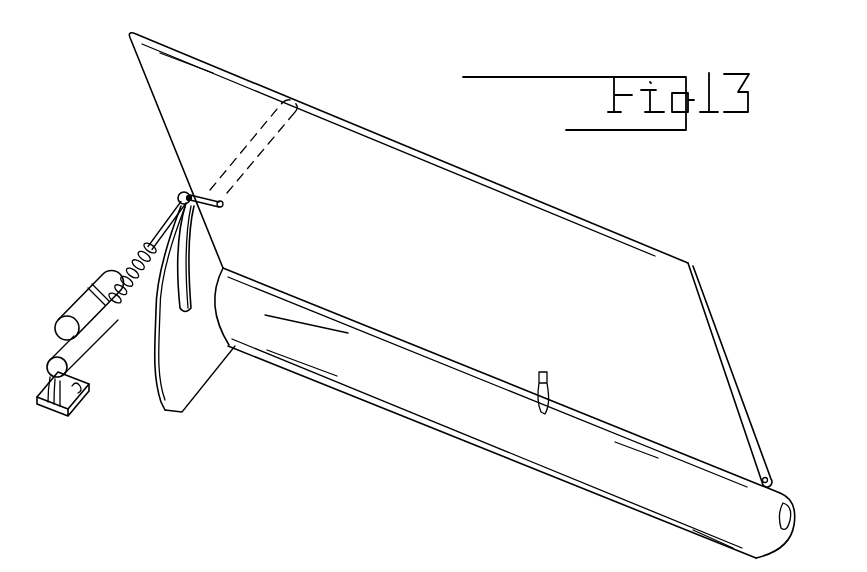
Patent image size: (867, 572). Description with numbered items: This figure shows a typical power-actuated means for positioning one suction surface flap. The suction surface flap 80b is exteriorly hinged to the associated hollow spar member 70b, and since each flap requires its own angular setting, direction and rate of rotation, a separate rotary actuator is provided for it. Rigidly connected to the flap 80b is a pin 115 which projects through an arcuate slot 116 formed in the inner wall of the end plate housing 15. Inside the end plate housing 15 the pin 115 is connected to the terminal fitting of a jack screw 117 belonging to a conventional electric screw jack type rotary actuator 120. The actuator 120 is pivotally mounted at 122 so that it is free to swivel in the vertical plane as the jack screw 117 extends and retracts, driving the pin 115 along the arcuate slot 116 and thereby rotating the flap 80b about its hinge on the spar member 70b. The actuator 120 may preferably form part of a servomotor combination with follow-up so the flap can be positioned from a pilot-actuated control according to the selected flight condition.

The suction surface flap 80b is at (520, 254).
The hollow spar member 70b is at (358, 375).
The end plate housing 15 is at (203, 382).
The pin 115 is at (177, 194).
The arcuate slot 116 is at (175, 312).
The jack screw 117 is at (169, 223).
The rotary actuator 120 is at (88, 289).
The pivotal mounting 122 is at (80, 395).